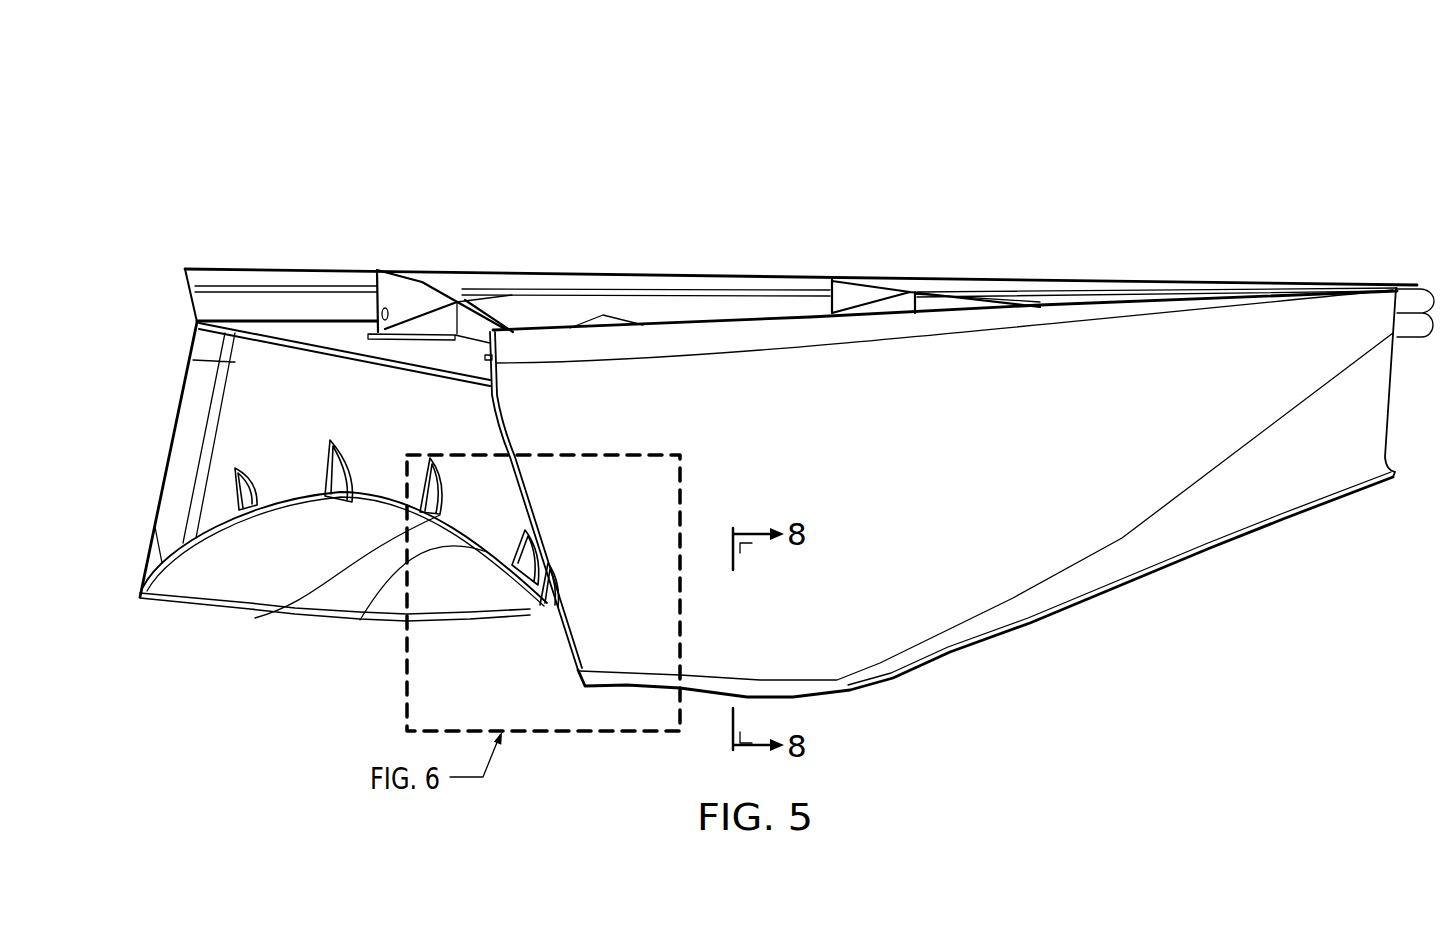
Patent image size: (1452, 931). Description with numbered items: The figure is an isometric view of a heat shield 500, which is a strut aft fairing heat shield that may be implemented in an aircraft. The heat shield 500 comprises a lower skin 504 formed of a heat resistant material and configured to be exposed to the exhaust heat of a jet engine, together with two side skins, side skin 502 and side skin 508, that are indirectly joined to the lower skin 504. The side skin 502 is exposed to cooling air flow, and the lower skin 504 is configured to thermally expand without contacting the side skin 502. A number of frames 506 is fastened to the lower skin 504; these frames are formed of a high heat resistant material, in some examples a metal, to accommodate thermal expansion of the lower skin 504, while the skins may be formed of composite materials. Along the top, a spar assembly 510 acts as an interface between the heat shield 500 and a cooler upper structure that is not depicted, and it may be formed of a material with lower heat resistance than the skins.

The heat shield 500 is at (749, 369).
The side skin 502 is at (982, 582).
The lower skin 504 is at (278, 565).
The number of frames 506 is at (258, 418).
The side skin 508 is at (155, 472).
The spar assembly 510 is at (733, 266).